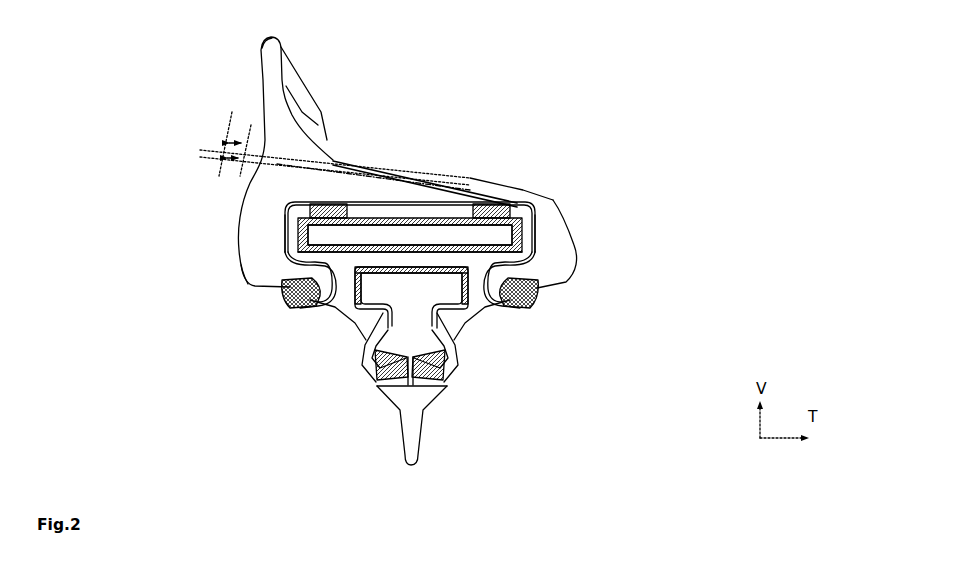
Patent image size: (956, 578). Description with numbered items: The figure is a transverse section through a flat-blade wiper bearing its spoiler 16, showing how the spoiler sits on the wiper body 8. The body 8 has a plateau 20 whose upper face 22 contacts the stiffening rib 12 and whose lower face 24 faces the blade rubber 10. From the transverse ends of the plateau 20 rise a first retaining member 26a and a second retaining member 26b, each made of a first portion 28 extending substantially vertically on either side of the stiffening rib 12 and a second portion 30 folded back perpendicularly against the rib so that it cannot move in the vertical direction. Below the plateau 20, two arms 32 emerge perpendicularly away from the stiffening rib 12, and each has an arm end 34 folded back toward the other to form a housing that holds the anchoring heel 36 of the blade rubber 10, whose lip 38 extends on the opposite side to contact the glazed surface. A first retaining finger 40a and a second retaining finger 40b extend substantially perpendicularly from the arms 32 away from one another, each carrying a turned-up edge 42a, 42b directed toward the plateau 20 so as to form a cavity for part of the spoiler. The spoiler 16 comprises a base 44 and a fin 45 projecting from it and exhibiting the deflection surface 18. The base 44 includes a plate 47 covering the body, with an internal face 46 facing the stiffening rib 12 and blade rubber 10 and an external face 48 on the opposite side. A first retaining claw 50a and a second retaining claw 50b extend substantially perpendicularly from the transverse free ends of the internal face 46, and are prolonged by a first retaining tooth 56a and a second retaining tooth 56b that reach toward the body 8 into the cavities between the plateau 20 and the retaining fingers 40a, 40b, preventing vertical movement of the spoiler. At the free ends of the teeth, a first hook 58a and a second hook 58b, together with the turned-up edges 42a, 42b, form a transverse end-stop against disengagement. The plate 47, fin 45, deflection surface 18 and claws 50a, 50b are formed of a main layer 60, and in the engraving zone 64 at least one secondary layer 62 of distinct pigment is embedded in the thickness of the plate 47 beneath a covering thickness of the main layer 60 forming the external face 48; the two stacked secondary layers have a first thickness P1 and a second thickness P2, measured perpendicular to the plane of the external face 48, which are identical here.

The wiper body 8 is at (564, 256).
The wiper blade rubber 10 is at (460, 340).
The stiffening rib 12 is at (490, 212).
The spoiler 16 is at (246, 79).
The deflection surface 18 is at (318, 128).
The plateau 20 is at (390, 262).
The upper face 22 is at (445, 215).
The lower face 24 is at (428, 268).
The first retaining member 26a is at (290, 238).
The second retaining member 26b is at (533, 228).
The first portion 28 is at (297, 258).
The second portion 30 is at (322, 197).
The arm 32 is at (313, 308).
The arm end 34 is at (370, 345).
The anchoring heel 36 is at (425, 302).
The lip 38 is at (420, 412).
The first retaining finger 40a is at (307, 305).
The second retaining finger 40b is at (517, 307).
The turned-up edge 42a is at (303, 288).
The turned-up edge 42b is at (530, 291).
The base 44 is at (287, 187).
The fin 45 is at (270, 62).
The internal face 46 is at (454, 237).
The plate 47 is at (526, 190).
The external face 48 is at (386, 257).
The first retaining claw 50a is at (258, 222).
The second retaining claw 50b is at (560, 264).
The first retaining tooth 56a is at (303, 278).
The second retaining tooth 56b is at (525, 292).
The first hook 58a is at (308, 303).
The second hook 58b is at (527, 303).
The main layer 60 is at (548, 204).
The secondary layer 62 is at (372, 167).
The engraving zone 64 is at (414, 150).
The first thickness P1 is at (247, 145).
The second thickness P2 is at (218, 158).